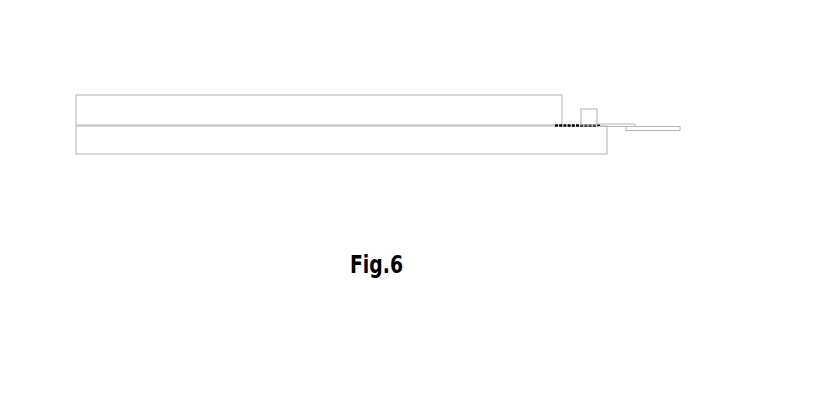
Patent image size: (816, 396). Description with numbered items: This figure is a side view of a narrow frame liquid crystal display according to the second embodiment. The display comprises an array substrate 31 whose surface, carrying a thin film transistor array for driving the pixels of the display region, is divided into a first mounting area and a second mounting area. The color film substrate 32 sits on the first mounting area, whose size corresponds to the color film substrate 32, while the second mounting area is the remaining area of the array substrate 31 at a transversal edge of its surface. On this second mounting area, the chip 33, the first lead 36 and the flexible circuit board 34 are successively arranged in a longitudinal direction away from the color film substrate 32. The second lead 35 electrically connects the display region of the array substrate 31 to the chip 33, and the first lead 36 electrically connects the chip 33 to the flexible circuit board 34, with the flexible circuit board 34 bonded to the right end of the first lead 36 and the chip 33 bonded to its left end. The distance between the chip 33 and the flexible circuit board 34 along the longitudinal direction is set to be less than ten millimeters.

The array substrate 31 is at (449, 142).
The color film substrate 32 is at (346, 103).
The chip 33 is at (588, 112).
The flexible circuit board 34 is at (627, 122).
The second lead 35 is at (563, 123).
The first lead 36 is at (602, 127).